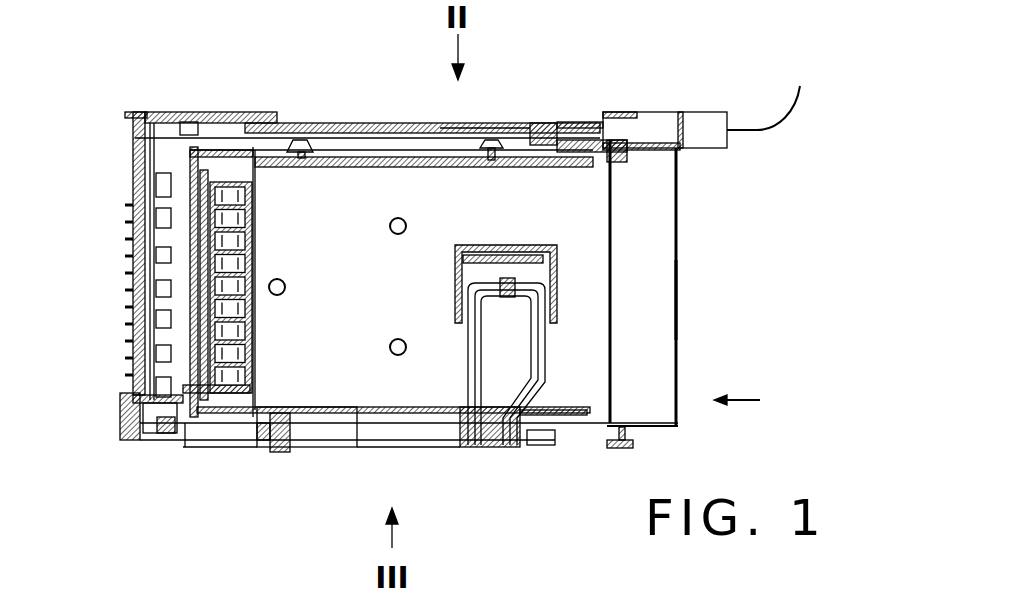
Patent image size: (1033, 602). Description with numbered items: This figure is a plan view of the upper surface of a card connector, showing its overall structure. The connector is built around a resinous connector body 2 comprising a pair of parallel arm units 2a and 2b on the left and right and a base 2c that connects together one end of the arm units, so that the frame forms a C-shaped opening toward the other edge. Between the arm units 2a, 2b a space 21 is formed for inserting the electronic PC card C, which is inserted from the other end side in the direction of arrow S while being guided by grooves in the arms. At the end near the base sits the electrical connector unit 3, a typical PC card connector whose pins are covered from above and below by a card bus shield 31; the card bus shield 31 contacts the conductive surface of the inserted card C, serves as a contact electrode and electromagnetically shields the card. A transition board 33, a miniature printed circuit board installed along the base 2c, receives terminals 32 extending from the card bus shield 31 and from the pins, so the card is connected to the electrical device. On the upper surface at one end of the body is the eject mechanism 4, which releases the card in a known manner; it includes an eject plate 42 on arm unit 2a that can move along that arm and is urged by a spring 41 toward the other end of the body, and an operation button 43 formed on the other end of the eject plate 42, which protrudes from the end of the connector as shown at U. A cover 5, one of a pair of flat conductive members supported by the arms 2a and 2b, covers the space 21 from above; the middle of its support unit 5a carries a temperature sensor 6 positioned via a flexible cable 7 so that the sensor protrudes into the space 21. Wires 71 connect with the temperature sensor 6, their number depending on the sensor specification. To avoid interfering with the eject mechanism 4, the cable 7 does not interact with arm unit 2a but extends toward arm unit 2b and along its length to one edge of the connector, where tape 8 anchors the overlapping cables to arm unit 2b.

The connector body 2 is at (331, 108).
The arm unit 2a is at (397, 108).
The arm unit 2b is at (438, 443).
The base 2c is at (188, 440).
The electrical connector unit 3 is at (172, 210).
The eject mechanism 4 is at (545, 104).
The cover 5 is at (390, 442).
The support unit 5a is at (493, 255).
The temperature sensor 6 is at (513, 275).
The flexible cable 7 is at (122, 408).
The tape 8 is at (312, 443).
The space 21 is at (640, 236).
The card bus shield 31 is at (250, 333).
The terminals 32 is at (135, 238).
The transition board 33 is at (125, 293).
The spring 41 is at (232, 112).
The eject plate 42 is at (457, 108).
The operation button 43 is at (652, 120).
The wires 71 is at (482, 383).
The PC card C is at (677, 303).
The arrow S is at (739, 382).
The protrusion of operation button U is at (771, 91).